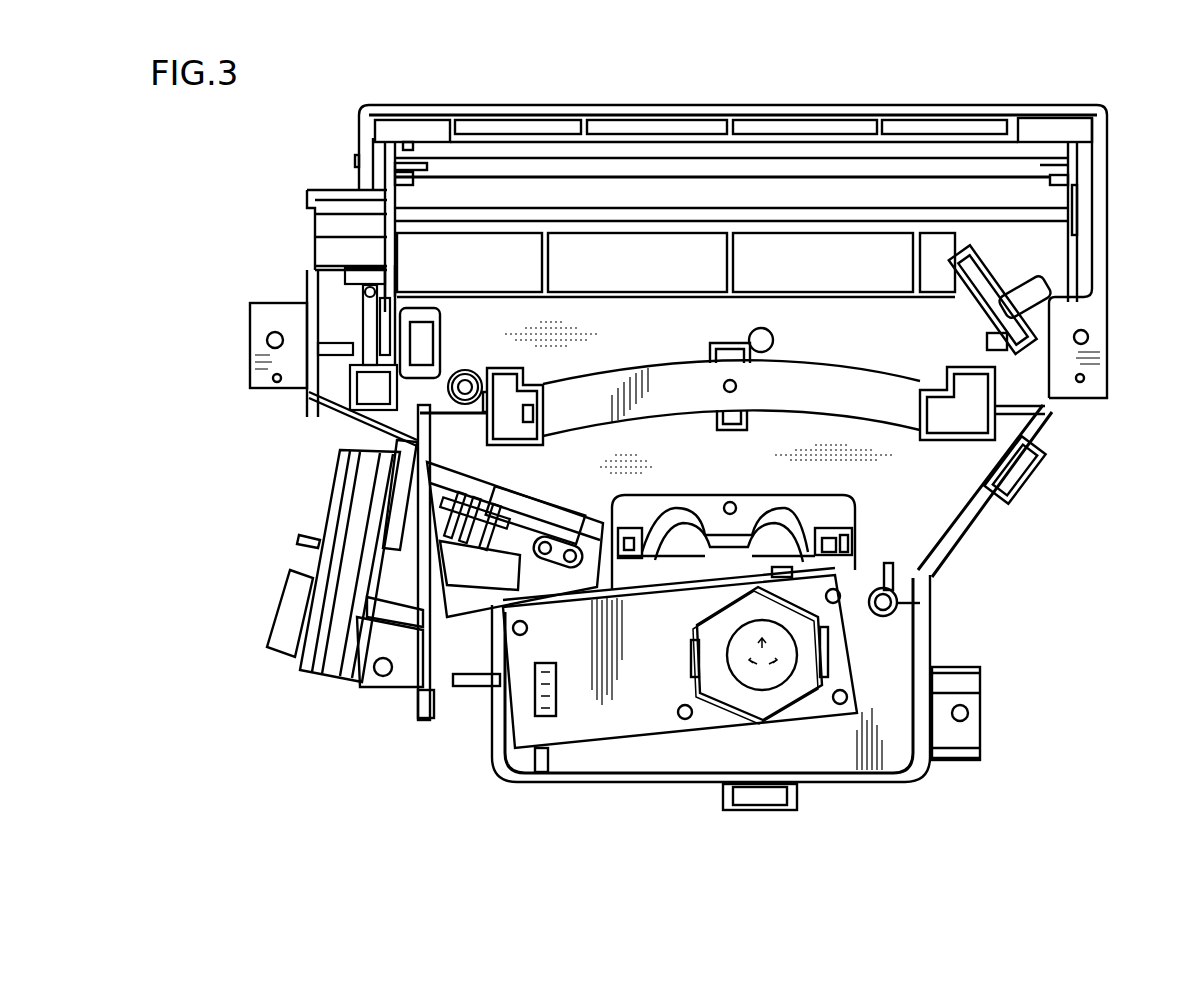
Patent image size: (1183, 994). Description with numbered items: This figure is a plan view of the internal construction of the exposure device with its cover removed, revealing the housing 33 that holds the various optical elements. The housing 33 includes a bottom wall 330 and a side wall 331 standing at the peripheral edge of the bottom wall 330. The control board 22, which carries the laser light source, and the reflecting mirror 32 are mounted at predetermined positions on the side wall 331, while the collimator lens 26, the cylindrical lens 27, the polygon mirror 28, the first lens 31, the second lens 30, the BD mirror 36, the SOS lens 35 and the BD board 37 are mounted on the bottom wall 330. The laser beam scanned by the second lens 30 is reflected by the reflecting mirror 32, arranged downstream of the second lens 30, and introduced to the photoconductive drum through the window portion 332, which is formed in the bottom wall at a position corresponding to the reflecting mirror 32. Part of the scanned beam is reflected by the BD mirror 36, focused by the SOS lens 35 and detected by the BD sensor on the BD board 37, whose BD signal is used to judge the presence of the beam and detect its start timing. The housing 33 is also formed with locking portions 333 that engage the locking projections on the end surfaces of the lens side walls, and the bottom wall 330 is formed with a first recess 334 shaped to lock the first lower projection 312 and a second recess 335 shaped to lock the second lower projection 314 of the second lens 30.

The control board 22 is at (317, 542).
The collimator lens 26 is at (468, 548).
The cylindrical lens 27 is at (520, 550).
The polygon mirror 28 is at (735, 690).
The second lens 30 is at (880, 413).
The first lens 31 is at (857, 512).
The reflecting mirror 32 is at (888, 167).
The housing 33 is at (915, 778).
The SOS lens 35 is at (372, 345).
The BD mirror 36 is at (993, 273).
The BD board 37 is at (415, 335).
The first lower projection 312 is at (775, 640).
The second lower projection 314 is at (720, 342).
The bottom wall 330 is at (905, 545).
The side wall 331 is at (930, 633).
The window portion 332 is at (1023, 197).
The locking portions 333 is at (490, 410).
The first recess 334 is at (723, 438).
The second recess 335 is at (745, 342).